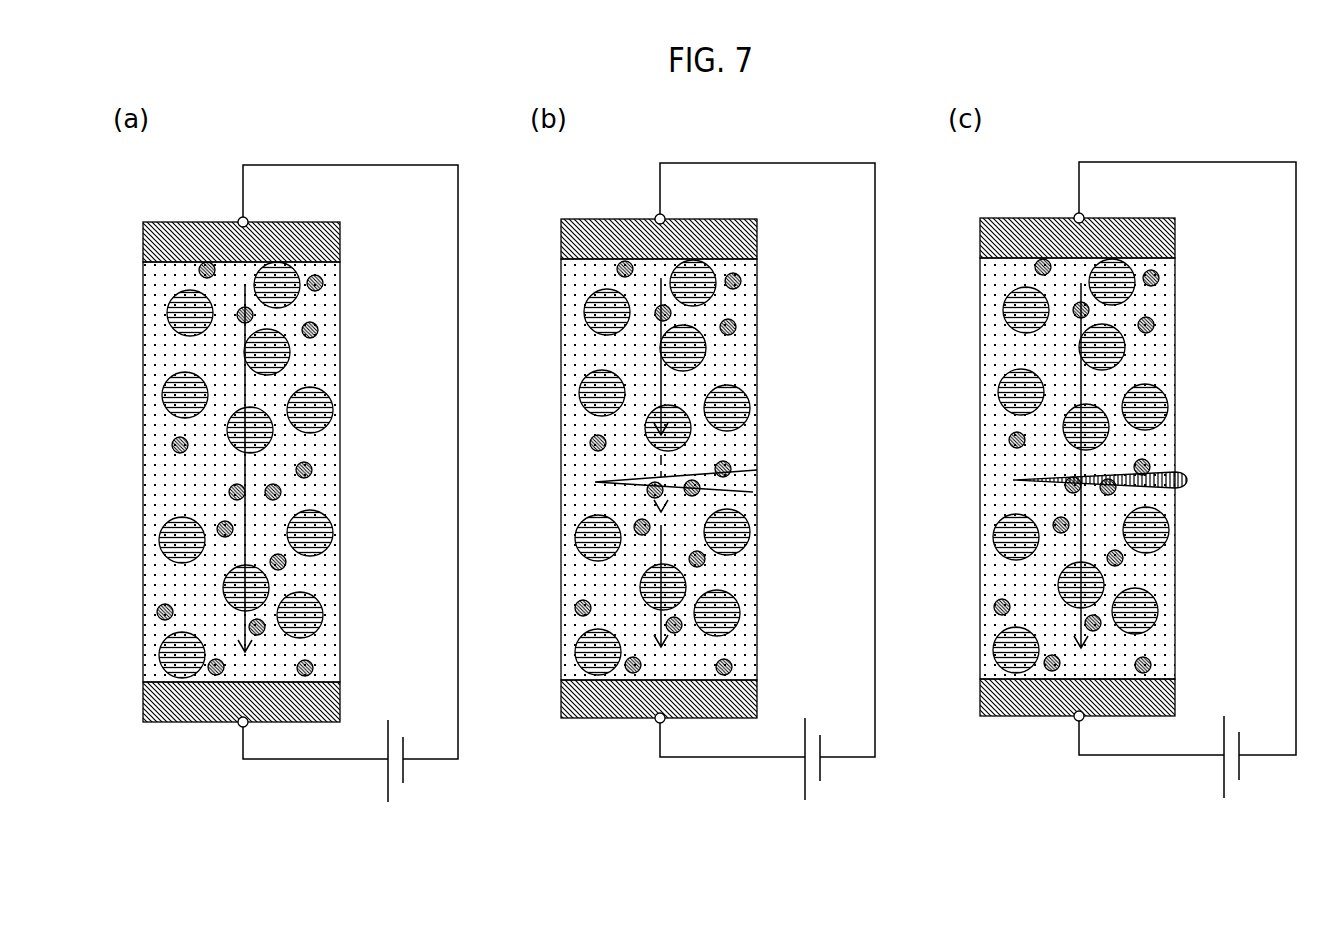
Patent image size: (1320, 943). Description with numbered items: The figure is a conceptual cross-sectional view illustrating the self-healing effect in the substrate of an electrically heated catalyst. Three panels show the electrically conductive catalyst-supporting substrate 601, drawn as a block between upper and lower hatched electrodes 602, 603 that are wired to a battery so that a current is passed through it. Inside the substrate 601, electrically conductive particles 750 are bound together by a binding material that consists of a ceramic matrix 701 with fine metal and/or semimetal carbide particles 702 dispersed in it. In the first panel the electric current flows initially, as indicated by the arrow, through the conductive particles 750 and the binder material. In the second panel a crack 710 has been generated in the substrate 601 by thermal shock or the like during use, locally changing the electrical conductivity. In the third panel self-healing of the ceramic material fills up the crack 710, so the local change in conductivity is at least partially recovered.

The electrically conductive catalyst-supporting substrate 601 is at (281, 479).
The positive electrode 602 is at (210, 234).
The negative electrode 603 is at (210, 712).
The ceramic matrix 701 is at (330, 578).
The fine metal and/or semimetal carbide particles 702 is at (305, 470).
The electrically conductive particles 750 is at (318, 405).
The crack 710 is at (750, 483).